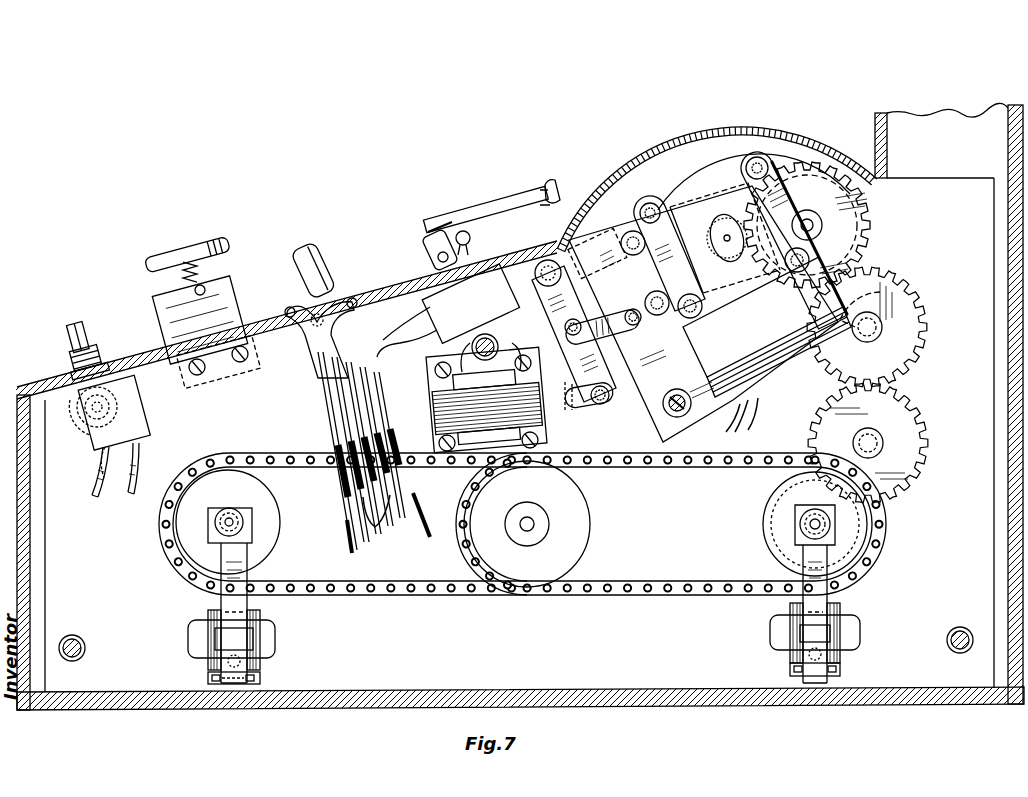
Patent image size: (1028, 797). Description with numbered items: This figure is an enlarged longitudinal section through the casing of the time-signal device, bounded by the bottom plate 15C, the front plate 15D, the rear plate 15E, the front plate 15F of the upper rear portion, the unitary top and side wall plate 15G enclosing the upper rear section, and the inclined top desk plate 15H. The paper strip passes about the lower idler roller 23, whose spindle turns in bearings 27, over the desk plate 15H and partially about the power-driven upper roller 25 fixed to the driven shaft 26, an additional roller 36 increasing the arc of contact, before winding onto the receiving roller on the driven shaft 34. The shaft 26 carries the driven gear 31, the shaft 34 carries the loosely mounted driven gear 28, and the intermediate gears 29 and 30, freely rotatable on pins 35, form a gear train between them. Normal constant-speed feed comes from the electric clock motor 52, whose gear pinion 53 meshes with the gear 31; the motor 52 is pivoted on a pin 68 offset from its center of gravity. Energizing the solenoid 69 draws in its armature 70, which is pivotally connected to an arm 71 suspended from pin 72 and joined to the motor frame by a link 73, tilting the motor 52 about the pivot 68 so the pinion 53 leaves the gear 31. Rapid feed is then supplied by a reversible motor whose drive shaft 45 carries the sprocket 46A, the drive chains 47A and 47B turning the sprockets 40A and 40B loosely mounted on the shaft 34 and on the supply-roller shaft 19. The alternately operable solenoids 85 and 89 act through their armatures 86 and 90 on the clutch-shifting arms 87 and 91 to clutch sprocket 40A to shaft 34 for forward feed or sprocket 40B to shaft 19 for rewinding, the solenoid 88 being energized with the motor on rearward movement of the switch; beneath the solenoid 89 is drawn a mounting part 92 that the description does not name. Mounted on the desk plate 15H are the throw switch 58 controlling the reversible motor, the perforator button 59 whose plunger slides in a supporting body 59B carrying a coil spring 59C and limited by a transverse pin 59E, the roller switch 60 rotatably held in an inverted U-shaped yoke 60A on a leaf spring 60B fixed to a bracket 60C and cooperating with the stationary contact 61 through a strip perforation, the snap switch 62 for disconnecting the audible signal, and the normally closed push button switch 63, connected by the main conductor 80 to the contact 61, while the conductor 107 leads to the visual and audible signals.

The bottom plate 15C is at (554, 690).
The front plate 15D is at (30, 533).
The rear plate 15E is at (1008, 600).
The front plate for the upper part of the rear portion of the casing 15F is at (887, 141).
The unitary top and side wall plate 15G is at (721, 128).
The top desk plate 15H is at (148, 365).
The shaft 19 is at (228, 524).
The lower idler roller 23 is at (82, 457).
The power-driven upper roller 25 is at (862, 204).
The driven shaft 26 is at (812, 228).
The bearing 27 is at (82, 426).
The driven gear 28 is at (870, 532).
The intermediate gear 29 is at (905, 452).
The intermediate gear 30 is at (900, 310).
The driven gear 31 is at (858, 240).
The driven shaft 34 is at (812, 528).
The pin 35 is at (884, 329).
The additional roller 36 is at (886, 284).
The sprocket 40A is at (766, 524).
The sprocket 40B is at (282, 540).
The drive shaft 45 is at (530, 525).
The sprocket 46A is at (576, 518).
The drive chain 47A is at (635, 465).
The drive chain 47B is at (320, 460).
The electric clock motor 52 is at (742, 314).
The gear pinion 53 is at (724, 262).
The throw switch 58 is at (313, 246).
The perforator button 59 is at (197, 240).
The supporting body 59B is at (232, 298).
The coil spring 59C is at (172, 270).
The transverse pin 59E is at (206, 289).
The roller-type switch 60 is at (432, 261).
The inverted U-shaped yoke 60A is at (432, 250).
The leaf spring 60B is at (514, 207).
The bracket 60C is at (560, 198).
The cooperative contact 61 is at (440, 294).
The snap switch 62 is at (472, 238).
The push button switch 63 is at (82, 332).
The pin 68 is at (668, 410).
The solenoid 69 is at (438, 403).
The armature 70 is at (566, 411).
The arm 71 is at (558, 314).
The pin 72 is at (540, 279).
The link 73 is at (626, 337).
The main conductor 80 is at (86, 474).
The solenoid 85 is at (774, 635).
The armature 86 is at (822, 633).
The clutch-shifting arm 87 is at (833, 618).
The solenoid 88 is at (840, 672).
The solenoid 89 is at (274, 638).
The armature 90 is at (232, 637).
The clutch-shifting arm 91 is at (234, 594).
The base 92 is at (208, 683).
The conductor 107 is at (384, 340).